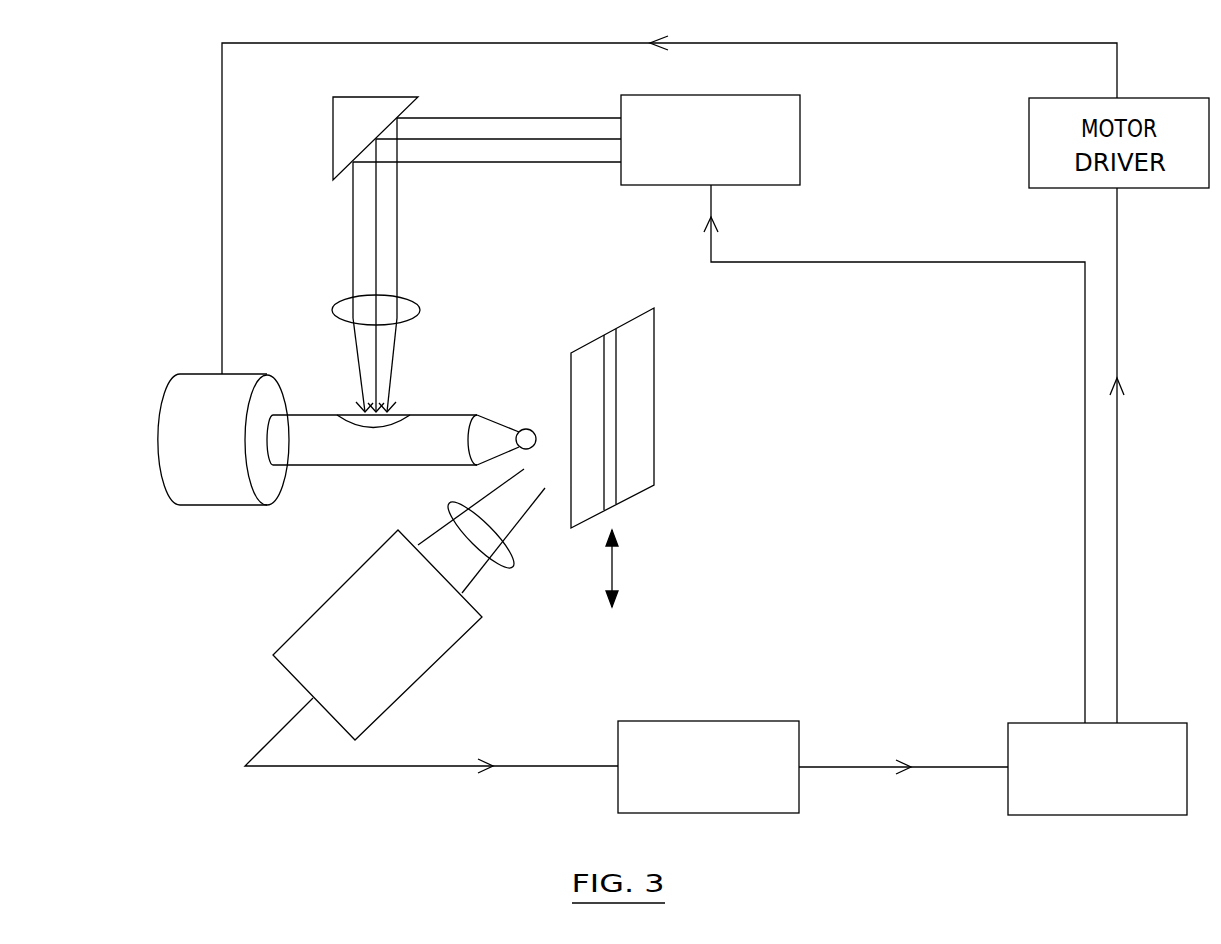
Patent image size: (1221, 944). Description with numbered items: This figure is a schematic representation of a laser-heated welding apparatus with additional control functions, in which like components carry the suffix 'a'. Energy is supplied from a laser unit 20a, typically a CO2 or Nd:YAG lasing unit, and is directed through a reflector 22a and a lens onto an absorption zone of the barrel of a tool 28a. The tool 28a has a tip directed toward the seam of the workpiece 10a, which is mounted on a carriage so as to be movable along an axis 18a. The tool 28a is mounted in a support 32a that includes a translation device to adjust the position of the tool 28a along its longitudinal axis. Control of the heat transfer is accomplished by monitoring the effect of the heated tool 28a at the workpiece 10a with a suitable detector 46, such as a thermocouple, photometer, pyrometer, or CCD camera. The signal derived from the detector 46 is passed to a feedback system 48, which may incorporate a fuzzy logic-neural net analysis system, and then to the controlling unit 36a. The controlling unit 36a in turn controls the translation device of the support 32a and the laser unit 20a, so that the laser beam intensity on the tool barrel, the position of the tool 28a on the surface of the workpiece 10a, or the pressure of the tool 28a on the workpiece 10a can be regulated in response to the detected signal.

The workpiece 10a is at (655, 450).
The axis 18a is at (613, 568).
The laser unit 20a is at (645, 177).
The reflector 22a is at (363, 108).
The tool 28a is at (350, 466).
The support 32a is at (200, 390).
The controlling unit 36a is at (1023, 732).
The detector 46 is at (443, 640).
The feedback system 48 is at (700, 728).